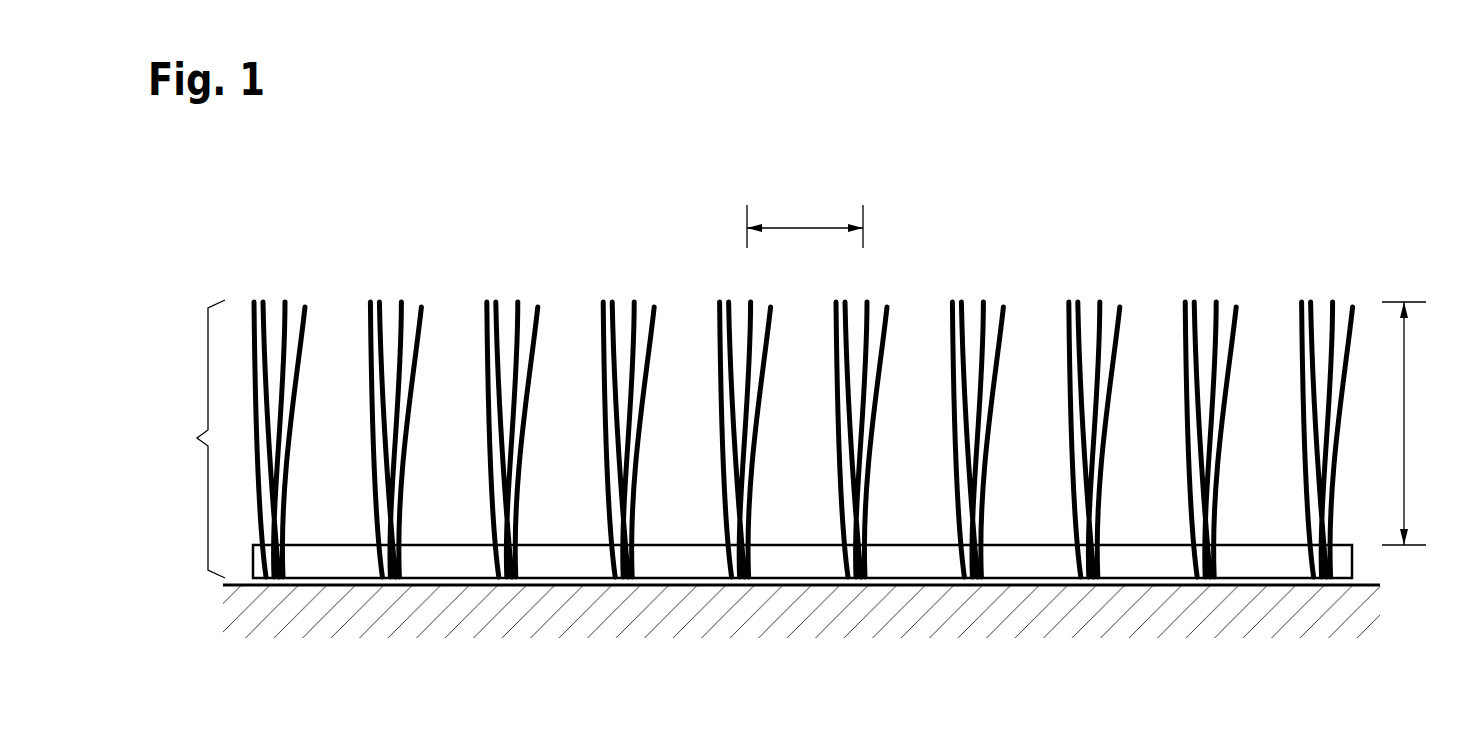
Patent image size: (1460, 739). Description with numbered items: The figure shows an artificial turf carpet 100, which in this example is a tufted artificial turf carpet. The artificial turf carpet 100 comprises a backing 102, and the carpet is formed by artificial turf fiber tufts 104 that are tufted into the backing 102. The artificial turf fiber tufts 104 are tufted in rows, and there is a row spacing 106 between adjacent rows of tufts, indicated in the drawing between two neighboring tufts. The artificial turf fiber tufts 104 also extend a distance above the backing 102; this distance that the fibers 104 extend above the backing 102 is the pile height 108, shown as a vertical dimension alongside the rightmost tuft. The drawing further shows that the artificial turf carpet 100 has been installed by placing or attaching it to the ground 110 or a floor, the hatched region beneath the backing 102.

The artificial turf carpet 100 is at (184, 439).
The backing 102 is at (577, 560).
The artificial turf fiber tufts 104 is at (278, 287).
The row spacing 106 is at (803, 224).
The pile height 108 is at (1405, 367).
The ground 110 is at (217, 617).